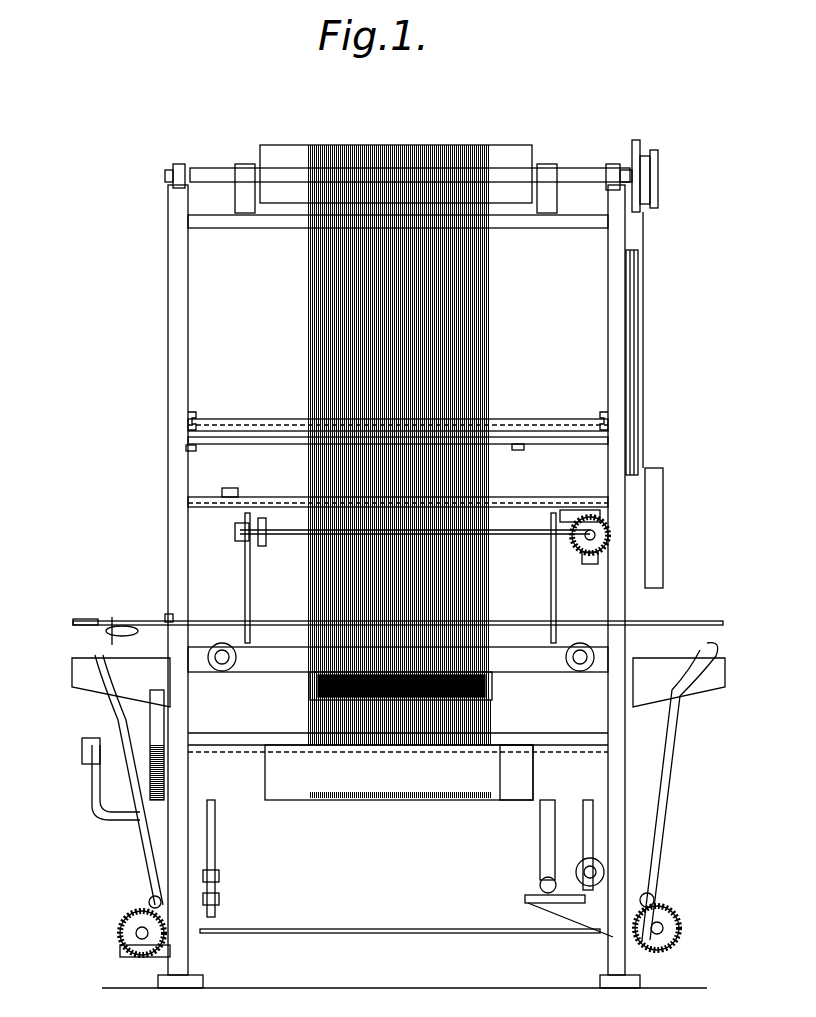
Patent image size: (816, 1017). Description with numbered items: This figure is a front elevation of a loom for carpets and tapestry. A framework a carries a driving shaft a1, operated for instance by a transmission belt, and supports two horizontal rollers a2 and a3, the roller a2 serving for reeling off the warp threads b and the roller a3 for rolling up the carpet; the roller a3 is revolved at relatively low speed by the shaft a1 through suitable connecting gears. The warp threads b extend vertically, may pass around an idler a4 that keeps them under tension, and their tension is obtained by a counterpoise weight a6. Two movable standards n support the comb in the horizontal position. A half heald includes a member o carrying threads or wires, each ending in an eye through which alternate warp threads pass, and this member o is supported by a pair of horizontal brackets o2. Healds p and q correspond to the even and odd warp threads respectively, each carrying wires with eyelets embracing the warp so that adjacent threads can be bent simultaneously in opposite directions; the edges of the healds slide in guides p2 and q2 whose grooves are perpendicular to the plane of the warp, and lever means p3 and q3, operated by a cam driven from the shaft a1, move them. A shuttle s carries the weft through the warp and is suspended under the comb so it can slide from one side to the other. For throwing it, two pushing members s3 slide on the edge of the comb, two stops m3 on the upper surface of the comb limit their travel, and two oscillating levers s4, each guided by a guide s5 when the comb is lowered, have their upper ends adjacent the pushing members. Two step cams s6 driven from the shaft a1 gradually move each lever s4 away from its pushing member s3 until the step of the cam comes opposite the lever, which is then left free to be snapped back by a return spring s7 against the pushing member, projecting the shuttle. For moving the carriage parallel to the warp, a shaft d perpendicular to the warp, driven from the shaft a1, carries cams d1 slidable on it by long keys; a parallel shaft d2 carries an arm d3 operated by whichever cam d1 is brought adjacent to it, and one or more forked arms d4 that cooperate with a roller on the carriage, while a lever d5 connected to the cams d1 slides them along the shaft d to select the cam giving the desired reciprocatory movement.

The framework a is at (168, 306).
The driving shaft a1 is at (243, 800).
The horizontal roller a2 is at (504, 148).
The horizontal roller a3 is at (300, 800).
The idler a4 is at (518, 800).
The counterpoise weight a6 is at (664, 494).
The warp threads b is at (492, 296).
The heald p is at (256, 419).
The guide p2 is at (188, 416).
The lever means p3 is at (512, 416).
The heald q is at (286, 445).
The guide q2 is at (188, 446).
The lever means q3 is at (520, 446).
The half heald member o is at (290, 497).
The horizontal brackets o2 is at (246, 520).
The movable standards n is at (250, 573).
The stops m3 is at (170, 614).
The shuttle s is at (130, 626).
The pushing members s3 is at (114, 620).
The oscillating levers s4 is at (148, 849).
The guide s5 is at (100, 682).
The step cams s6 is at (140, 912).
The return springs s7 is at (150, 958).
The shaft d is at (612, 864).
The cams d1 is at (652, 888).
The shaft d2 is at (540, 889).
The arm d3 is at (572, 916).
The arms d4 is at (540, 864).
The lever d5 is at (645, 812).